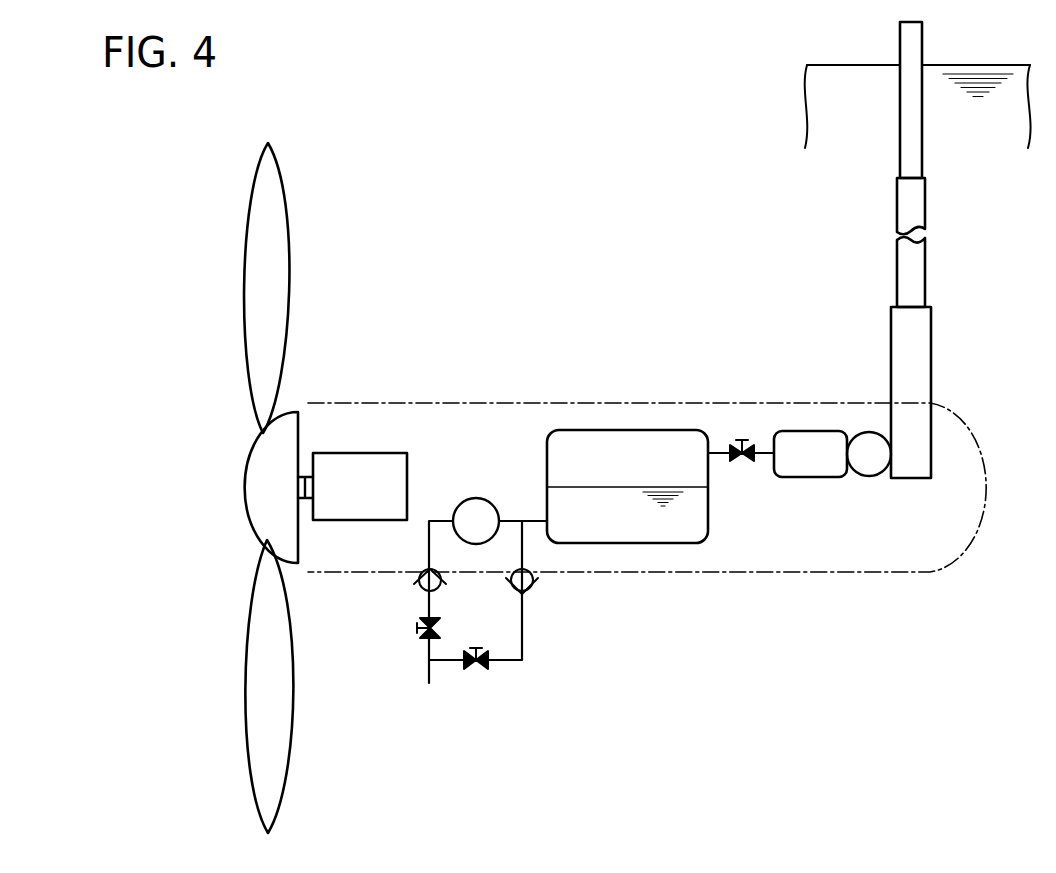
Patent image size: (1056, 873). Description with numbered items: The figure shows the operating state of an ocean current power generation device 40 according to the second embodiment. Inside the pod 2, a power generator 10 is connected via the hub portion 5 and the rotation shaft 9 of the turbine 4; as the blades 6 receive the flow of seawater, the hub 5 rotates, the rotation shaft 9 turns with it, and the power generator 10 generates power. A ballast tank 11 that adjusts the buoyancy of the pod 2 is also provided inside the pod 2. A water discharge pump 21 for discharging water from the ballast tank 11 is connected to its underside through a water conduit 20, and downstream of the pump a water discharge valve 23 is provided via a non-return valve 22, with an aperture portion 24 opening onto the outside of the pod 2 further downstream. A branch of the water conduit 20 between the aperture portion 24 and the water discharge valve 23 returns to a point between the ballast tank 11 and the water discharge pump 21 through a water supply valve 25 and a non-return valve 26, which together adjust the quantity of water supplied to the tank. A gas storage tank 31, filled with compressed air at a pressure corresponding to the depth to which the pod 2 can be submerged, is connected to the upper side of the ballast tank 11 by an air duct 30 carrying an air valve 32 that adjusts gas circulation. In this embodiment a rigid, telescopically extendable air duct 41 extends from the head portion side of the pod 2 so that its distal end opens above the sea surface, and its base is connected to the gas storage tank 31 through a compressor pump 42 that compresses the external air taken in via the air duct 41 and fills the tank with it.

The pod 2 is at (530, 402).
The turbine 4 is at (204, 491).
The hub portion 5 is at (260, 462).
The blades 6 is at (252, 268).
The rotation shaft 9 is at (305, 475).
The power generator 10 is at (368, 465).
The ballast tank 11 is at (588, 430).
The water conduit 20 is at (525, 645).
The water discharge pump 21 is at (476, 497).
The non-return valve 22 is at (420, 586).
The water discharge valve 23 is at (414, 628).
The aperture portion 24 is at (428, 665).
The water supply valve 25 is at (482, 668).
The non-return valve 26 is at (534, 584).
The air duct 30 is at (765, 452).
The gas storage tank 31 is at (810, 440).
The air valve 32 is at (742, 438).
The ocean current power generation device 40 is at (643, 308).
The air duct 41 is at (900, 150).
The compressor pump 42 is at (869, 432).